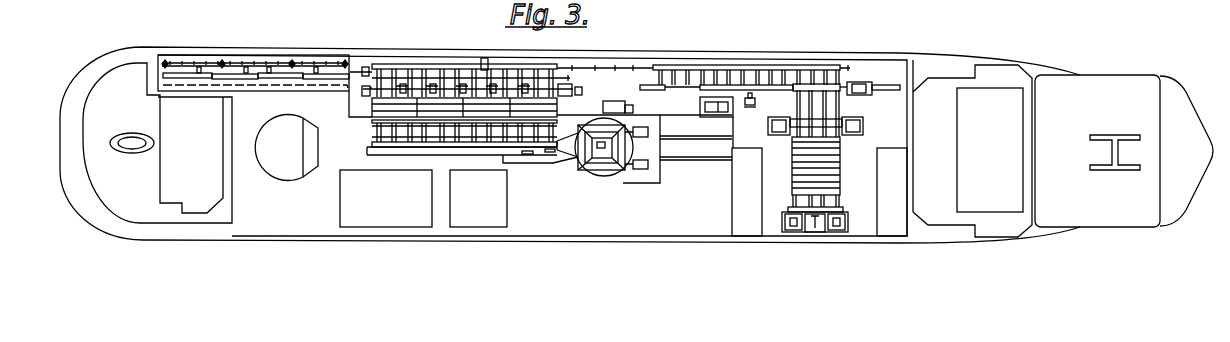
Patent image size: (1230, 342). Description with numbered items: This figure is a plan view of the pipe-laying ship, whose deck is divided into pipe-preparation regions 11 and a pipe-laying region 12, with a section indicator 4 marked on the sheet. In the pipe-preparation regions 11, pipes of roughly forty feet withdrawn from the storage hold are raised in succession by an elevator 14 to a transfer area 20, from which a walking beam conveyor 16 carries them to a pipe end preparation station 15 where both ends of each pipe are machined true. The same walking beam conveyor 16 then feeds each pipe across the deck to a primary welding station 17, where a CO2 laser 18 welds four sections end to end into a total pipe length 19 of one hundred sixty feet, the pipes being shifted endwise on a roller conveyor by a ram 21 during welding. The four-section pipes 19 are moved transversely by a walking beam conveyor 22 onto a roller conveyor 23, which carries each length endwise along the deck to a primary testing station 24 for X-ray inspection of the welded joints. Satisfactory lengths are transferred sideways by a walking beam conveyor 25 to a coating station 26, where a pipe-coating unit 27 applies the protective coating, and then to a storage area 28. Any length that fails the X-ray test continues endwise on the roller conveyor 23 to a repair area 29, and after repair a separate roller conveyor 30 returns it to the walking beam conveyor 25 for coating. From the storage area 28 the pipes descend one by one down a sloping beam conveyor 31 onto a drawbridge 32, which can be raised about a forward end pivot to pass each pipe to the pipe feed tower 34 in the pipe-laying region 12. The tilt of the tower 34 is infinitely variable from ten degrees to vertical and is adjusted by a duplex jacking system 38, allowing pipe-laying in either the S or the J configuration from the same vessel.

The section line indicator 4 is at (848, 5).
The pipe-preparation regions 11 is at (398, 80).
The pipe-laying region 12 is at (567, 165).
The elevator 14 is at (835, 210).
The pipe end preparation station 15 is at (857, 116).
The walking beam conveyor 16 is at (838, 100).
The primary welding station 17 is at (833, 78).
The CO2 laser 18 is at (731, 120).
The total pipe length 19 is at (786, 70).
The transfer area 20 is at (832, 177).
The ram 21 is at (858, 83).
The walking beam conveyor 22 is at (763, 70).
The roller conveyor 23 is at (342, 72).
The primary testing station 24 is at (540, 68).
The walking beam conveyor 25 is at (447, 88).
The coating station 26 is at (417, 90).
The pipe-coating unit 27 is at (580, 90).
The storage area 28 is at (555, 110).
The repair area 29 is at (296, 70).
The roller conveyor 30 is at (350, 78).
The sloping beam conveyor 31 is at (377, 133).
The drawbridge 32 is at (507, 160).
The pipe feed tower 34 is at (600, 172).
The duplex jacking system 38 is at (655, 167).